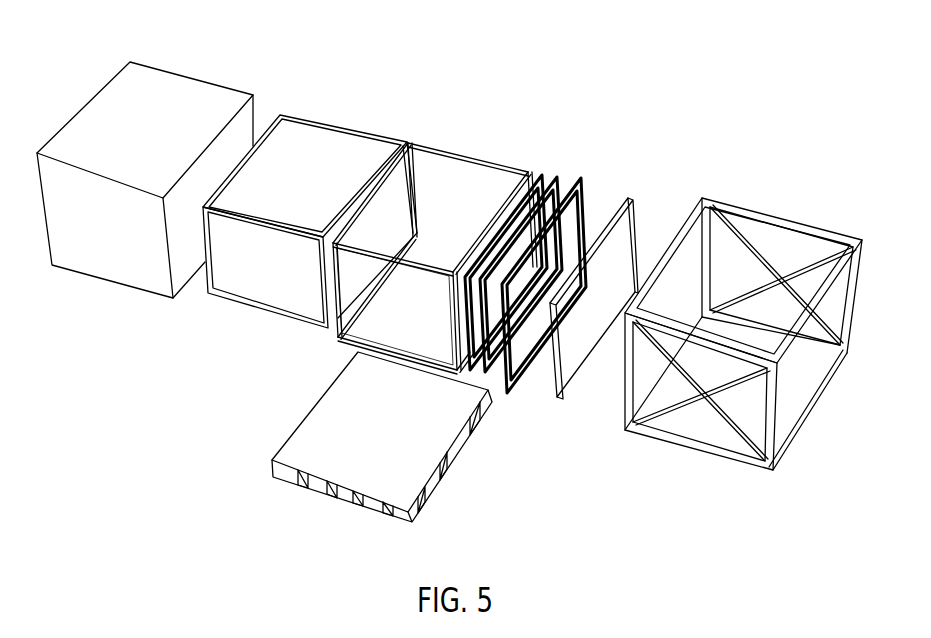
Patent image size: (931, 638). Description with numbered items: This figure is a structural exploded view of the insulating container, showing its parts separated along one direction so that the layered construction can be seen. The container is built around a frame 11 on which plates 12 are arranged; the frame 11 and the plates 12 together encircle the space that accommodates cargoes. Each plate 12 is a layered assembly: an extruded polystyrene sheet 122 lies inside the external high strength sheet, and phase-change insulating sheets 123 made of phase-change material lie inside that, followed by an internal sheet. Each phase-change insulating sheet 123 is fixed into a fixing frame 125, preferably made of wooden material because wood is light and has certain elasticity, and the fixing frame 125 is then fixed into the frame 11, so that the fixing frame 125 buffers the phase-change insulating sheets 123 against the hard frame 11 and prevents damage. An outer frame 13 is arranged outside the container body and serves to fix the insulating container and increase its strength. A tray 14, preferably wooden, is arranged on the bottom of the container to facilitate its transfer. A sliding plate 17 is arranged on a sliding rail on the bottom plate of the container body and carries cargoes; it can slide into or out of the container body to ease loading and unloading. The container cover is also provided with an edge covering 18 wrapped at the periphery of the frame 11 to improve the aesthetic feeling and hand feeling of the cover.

The frame 11 is at (463, 150).
The plate 12 is at (610, 238).
The outer frame 13 is at (748, 210).
The tray 14 is at (368, 505).
The sliding plate 17 is at (403, 320).
The edge covering 18 is at (583, 173).
The extruded polystyrene sheet 122 is at (148, 103).
The phase-change insulating sheet 123 is at (310, 153).
The fixing frame 125 is at (280, 113).